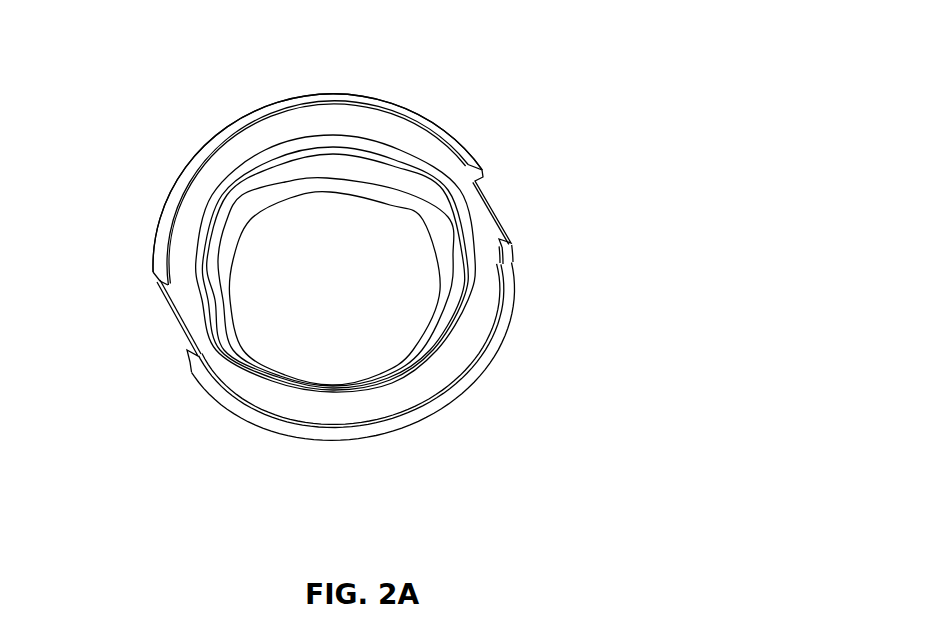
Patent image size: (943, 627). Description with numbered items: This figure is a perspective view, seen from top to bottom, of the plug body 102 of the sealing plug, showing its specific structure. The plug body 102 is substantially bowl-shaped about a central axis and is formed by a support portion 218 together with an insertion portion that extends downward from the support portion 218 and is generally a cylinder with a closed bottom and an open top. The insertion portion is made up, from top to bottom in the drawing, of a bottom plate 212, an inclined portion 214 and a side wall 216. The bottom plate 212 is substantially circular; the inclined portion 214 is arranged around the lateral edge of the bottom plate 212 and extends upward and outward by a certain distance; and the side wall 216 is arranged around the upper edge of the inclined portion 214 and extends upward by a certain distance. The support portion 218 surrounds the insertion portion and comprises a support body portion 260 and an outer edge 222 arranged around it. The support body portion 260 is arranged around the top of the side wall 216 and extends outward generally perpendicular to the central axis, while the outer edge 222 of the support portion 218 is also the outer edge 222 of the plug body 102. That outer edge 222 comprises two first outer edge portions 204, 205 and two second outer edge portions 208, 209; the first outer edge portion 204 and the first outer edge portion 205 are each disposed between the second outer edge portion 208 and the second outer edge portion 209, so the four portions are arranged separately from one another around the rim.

The plug body 102 is at (650, 156).
The first outer edge portion 204 is at (240, 127).
The first outer edge portion 205 is at (446, 397).
The second outer edge portion 208 is at (183, 317).
The second outer edge portion 209 is at (496, 233).
The bottom plate 212 is at (342, 352).
The inclined portion 214 is at (317, 170).
The side wall 216 is at (380, 143).
The support portion 218 is at (500, 299).
The outer edge 222 is at (500, 330).
The support body portion 260 is at (447, 175).